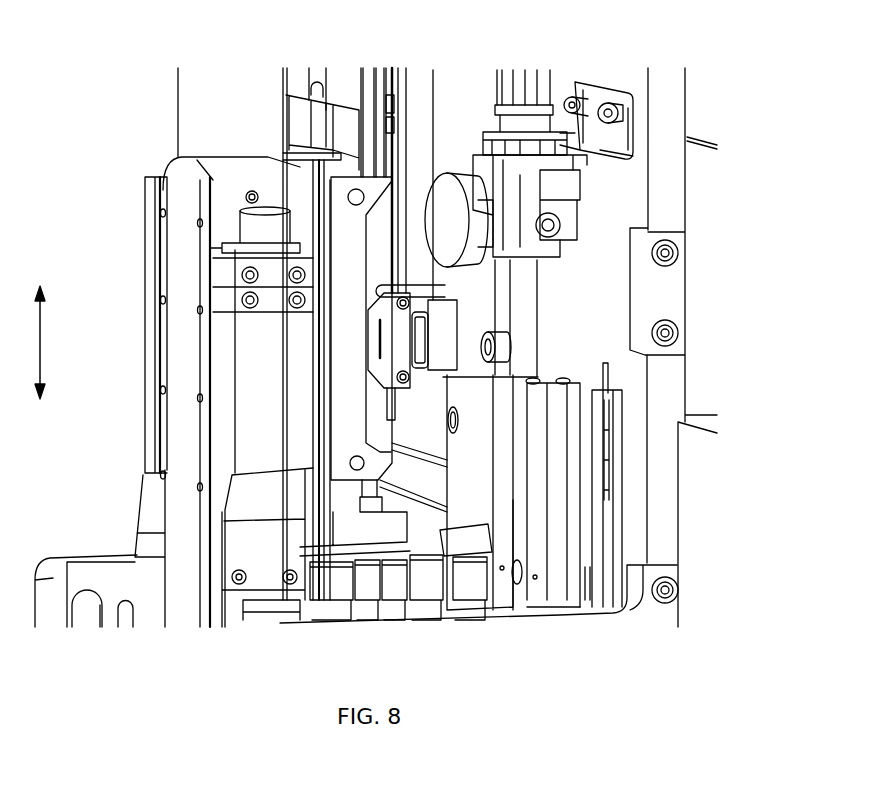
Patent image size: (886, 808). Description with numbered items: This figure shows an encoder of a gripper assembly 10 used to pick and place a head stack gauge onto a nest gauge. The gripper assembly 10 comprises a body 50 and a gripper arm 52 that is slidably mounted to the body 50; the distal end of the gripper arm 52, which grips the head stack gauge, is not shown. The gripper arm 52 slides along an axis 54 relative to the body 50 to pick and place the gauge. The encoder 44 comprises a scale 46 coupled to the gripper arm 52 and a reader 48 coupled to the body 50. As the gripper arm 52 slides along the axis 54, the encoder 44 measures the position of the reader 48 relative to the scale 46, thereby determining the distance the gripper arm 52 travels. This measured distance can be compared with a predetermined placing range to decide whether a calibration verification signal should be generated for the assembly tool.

The gripper assembly 10 is at (142, 46).
The encoder 44 is at (470, 303).
The scale 46 is at (345, 322).
The reader 48 is at (415, 355).
The body 50 is at (655, 100).
The gripper arm 52 is at (222, 386).
The axis 54 is at (39, 342).